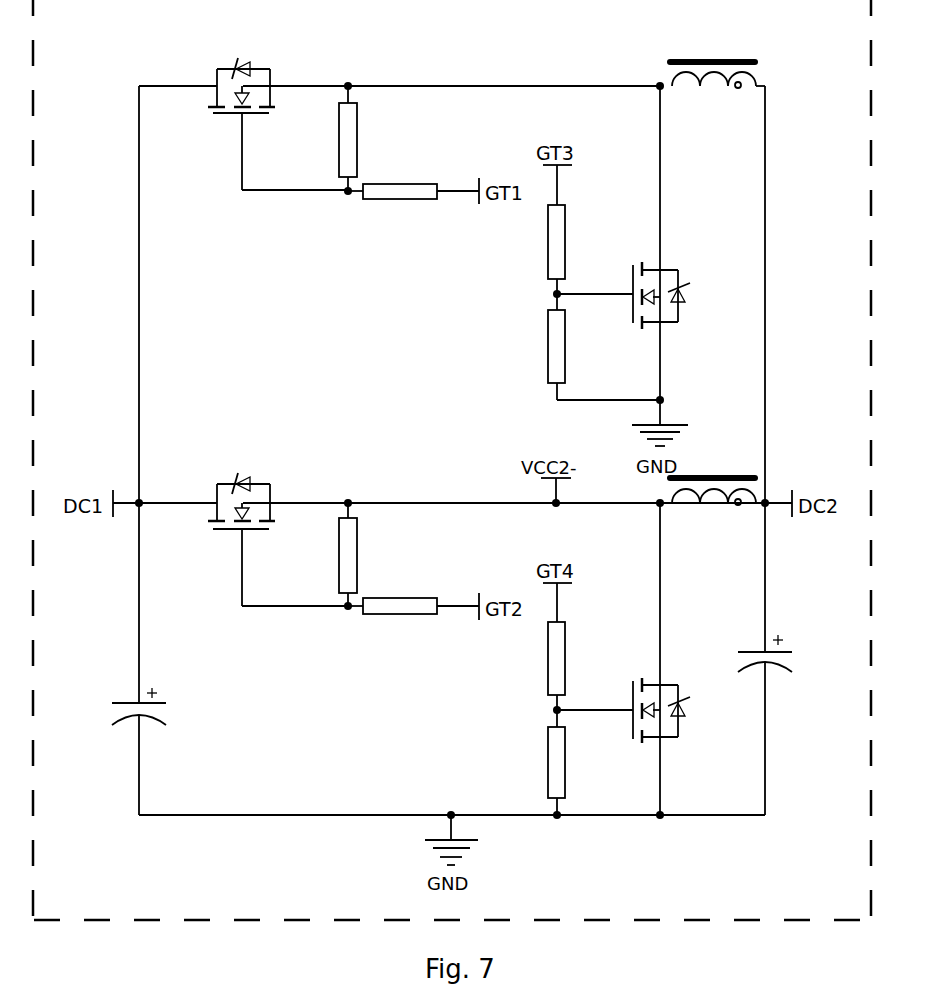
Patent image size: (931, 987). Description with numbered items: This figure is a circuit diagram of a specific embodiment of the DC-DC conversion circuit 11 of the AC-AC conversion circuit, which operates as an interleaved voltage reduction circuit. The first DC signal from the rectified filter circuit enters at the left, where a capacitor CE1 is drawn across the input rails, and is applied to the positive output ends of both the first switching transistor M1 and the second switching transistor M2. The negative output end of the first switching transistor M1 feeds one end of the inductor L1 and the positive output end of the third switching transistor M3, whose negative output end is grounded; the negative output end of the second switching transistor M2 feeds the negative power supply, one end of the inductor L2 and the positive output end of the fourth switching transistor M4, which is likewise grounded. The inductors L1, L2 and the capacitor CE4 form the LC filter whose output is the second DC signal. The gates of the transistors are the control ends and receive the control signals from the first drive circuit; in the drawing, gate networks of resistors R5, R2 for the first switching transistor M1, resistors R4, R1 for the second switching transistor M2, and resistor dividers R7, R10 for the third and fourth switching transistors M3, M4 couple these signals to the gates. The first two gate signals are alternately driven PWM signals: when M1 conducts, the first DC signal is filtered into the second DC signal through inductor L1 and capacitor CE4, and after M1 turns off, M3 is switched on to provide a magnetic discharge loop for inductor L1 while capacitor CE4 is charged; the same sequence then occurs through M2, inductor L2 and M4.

The DC-DC conversion circuit 11 is at (452, 466).
The first switching transistor M1 is at (277, 115).
The second switching transistor M2 is at (277, 539).
The third switching transistor M3 is at (676, 295).
The fourth switching transistor M4 is at (674, 705).
The gate resistor R1 is at (413, 619).
The gate resistor R2 is at (413, 205).
The pull-up resistor R4 is at (362, 554).
The pull-up resistor R5 is at (362, 138).
The gate divider resistor R7 is at (571, 446).
The gate divider resistor R10 is at (604, 554).
The inductor L1 is at (717, 60).
The inductor L2 is at (713, 474).
The input electrolytic capacitor CE1 is at (158, 703).
The capacitor CE4 is at (753, 674).